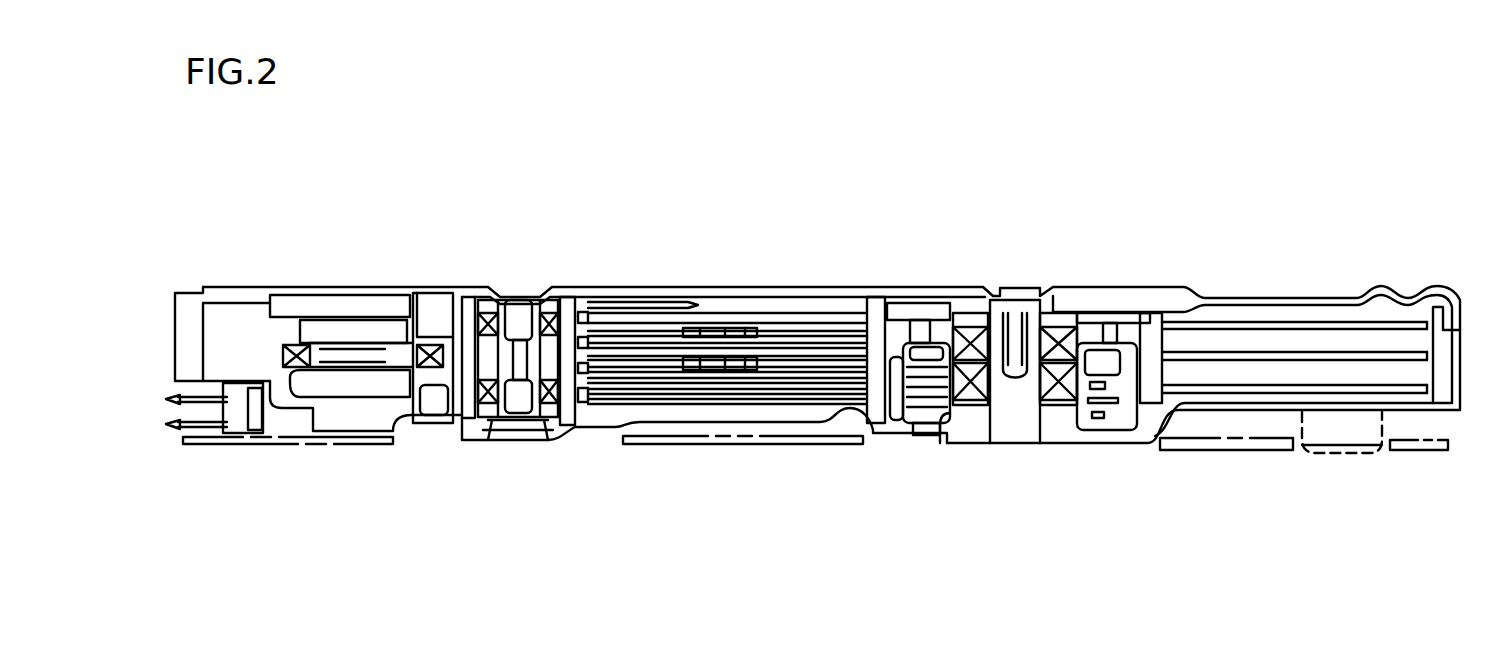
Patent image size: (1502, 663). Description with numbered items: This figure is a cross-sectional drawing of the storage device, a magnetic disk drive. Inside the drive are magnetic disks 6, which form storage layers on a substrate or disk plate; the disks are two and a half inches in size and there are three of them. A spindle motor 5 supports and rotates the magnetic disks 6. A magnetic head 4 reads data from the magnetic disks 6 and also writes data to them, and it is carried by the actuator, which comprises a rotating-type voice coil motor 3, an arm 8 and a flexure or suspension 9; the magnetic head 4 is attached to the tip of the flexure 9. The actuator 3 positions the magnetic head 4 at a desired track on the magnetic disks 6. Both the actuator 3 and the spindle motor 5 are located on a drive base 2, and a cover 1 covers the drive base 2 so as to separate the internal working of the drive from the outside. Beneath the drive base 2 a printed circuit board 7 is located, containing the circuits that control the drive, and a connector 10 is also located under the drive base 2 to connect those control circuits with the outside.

The cover 1 is at (237, 287).
The drive base 2 is at (395, 446).
The voice coil motor (VCM) 3 is at (480, 428).
The magnetic head 4 is at (740, 300).
The spindle motor 5 is at (1060, 447).
The magnetic disks 6 is at (1335, 382).
The printed circuit board 7 is at (1252, 548).
The arm 8 is at (607, 288).
The flexure (suspension) 9 is at (710, 298).
The connector 10 is at (205, 450).